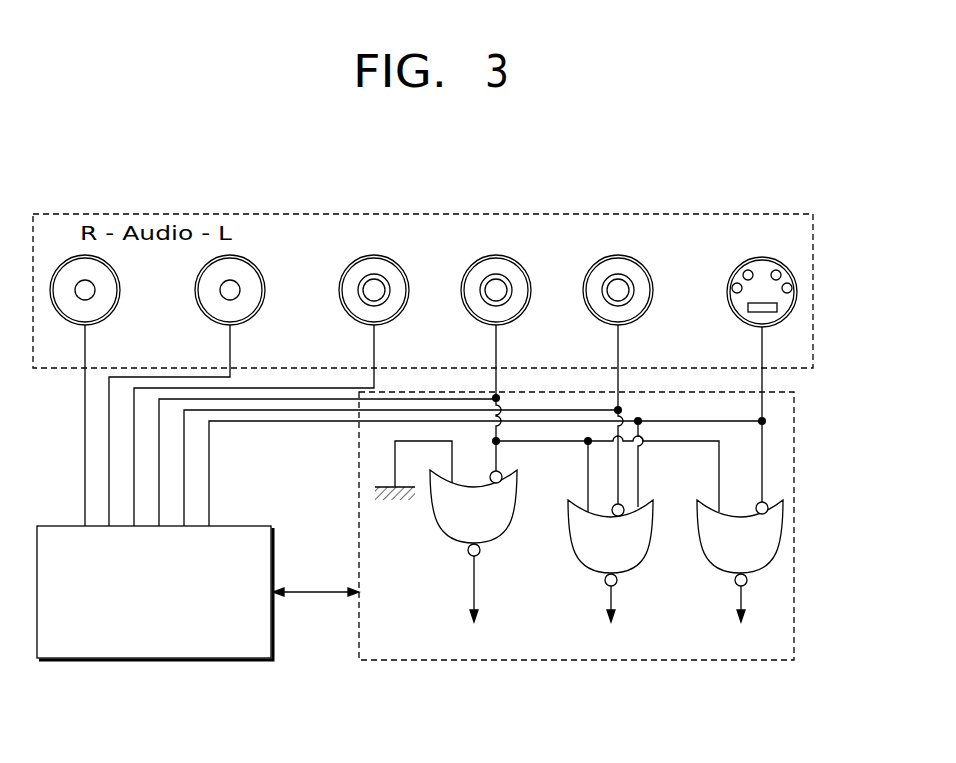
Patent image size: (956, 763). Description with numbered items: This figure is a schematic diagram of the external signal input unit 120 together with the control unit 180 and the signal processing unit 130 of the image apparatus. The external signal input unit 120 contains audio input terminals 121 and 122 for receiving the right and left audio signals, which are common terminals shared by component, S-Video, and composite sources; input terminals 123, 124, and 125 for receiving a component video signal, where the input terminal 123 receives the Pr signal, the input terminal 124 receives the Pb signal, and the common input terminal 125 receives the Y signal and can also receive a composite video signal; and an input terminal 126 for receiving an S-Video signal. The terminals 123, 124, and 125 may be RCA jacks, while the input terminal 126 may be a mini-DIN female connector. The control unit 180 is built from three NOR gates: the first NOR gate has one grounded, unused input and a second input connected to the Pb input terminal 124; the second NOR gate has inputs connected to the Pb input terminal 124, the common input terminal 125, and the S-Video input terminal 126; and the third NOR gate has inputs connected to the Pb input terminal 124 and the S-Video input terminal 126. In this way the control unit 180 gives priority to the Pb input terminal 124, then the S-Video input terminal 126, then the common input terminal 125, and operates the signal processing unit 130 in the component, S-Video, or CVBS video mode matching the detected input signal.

The external signal input unit 120 is at (780, 213).
The audio input terminal 121 is at (109, 258).
The audio input terminal 122 is at (256, 258).
The input terminal 123 is at (400, 258).
The input terminal 124 is at (522, 258).
The common input terminal 125 is at (655, 292).
The input terminal 126 is at (797, 268).
The signal processing unit 130 is at (63, 524).
The control unit 180 is at (794, 392).